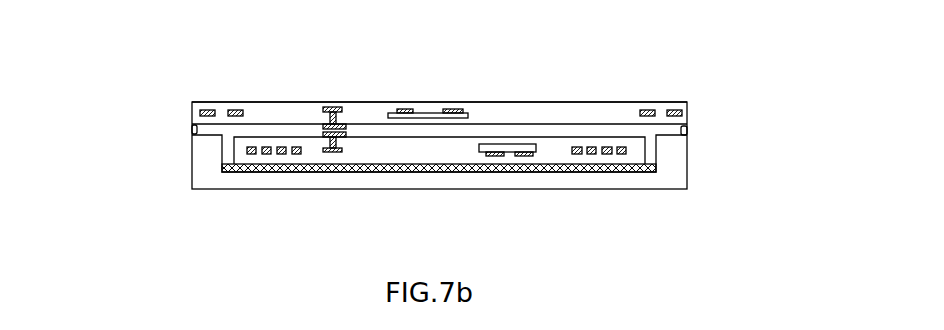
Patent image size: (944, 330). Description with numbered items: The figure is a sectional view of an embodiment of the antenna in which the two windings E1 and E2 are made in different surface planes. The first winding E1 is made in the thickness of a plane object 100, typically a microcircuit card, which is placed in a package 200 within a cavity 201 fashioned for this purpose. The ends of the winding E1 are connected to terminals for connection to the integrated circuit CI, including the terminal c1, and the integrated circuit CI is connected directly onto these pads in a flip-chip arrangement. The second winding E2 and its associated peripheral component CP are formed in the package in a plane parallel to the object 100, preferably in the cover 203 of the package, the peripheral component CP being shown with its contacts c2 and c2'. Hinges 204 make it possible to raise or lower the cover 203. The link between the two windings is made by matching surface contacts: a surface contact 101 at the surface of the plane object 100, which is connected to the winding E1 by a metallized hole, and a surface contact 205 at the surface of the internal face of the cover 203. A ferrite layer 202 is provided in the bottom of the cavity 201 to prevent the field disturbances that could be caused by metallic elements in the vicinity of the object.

The plane object 100 is at (645, 148).
The surface contact 101 is at (343, 137).
The package 200 is at (193, 190).
The cavity 201 is at (227, 157).
The ferrite layer 202 is at (317, 173).
The cover 203 is at (262, 109).
The hinges 204 is at (193, 127).
The surface contact 205 is at (327, 123).
The peripheral component CP is at (470, 112).
The integrated circuit CI is at (537, 148).
The terminal c1 is at (487, 156).
The second contact c2 is at (449, 139).
The second contact (prime) c2' is at (456, 81).
The first winding E1 is at (622, 155).
The second winding E2 is at (677, 108).